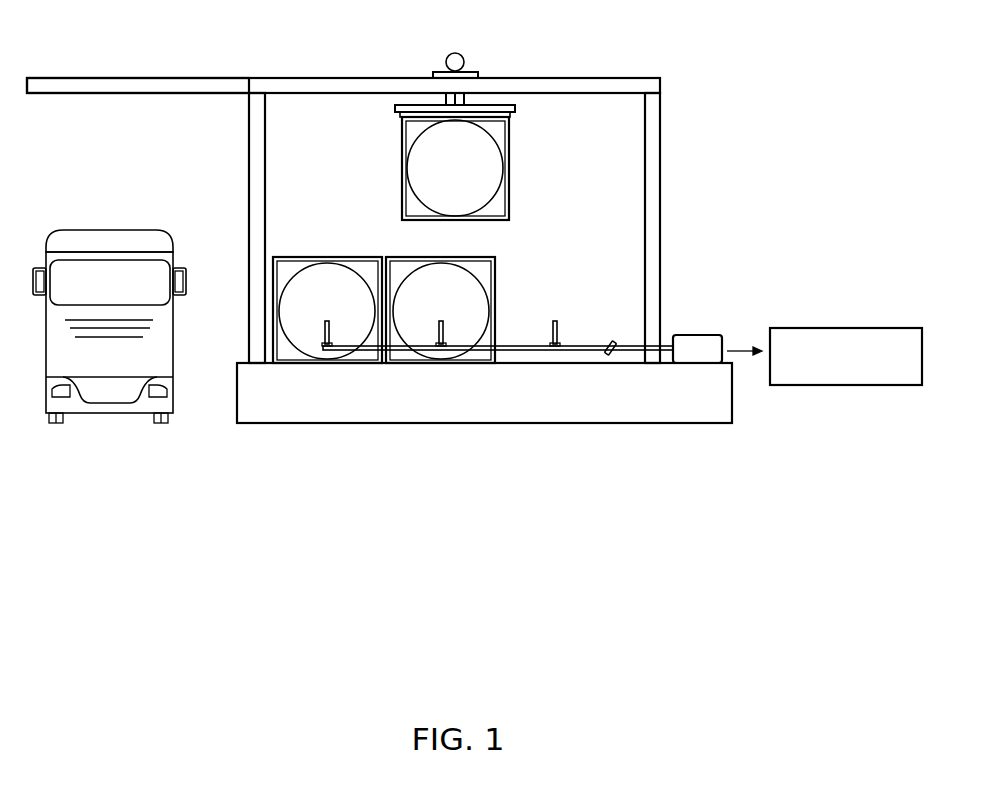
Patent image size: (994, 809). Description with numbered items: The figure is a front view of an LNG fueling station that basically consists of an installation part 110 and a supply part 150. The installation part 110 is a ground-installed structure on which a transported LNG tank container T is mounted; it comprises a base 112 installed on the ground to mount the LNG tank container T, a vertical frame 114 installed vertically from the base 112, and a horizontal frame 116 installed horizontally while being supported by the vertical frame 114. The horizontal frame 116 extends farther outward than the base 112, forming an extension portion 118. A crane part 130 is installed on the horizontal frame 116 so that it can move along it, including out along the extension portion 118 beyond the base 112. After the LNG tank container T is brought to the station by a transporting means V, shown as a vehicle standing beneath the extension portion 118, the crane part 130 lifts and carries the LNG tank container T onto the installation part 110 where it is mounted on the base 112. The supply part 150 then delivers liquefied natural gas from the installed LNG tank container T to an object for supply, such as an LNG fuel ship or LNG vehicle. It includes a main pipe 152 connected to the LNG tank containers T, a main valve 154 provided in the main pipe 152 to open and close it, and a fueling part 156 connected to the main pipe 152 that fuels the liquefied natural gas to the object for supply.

The installation part 110 is at (474, 271).
The base 112 is at (328, 424).
The vertical frame 114 is at (257, 181).
The horizontal frame 116 is at (282, 85).
The extension portion 118 is at (60, 85).
The crane part 130 is at (406, 110).
The LNG tank container T is at (495, 168).
The supply part 150 is at (522, 422).
The main pipe 152 is at (533, 350).
The main valve 154 is at (610, 356).
The fueling part 156 is at (697, 401).
The transporting means V is at (108, 401).